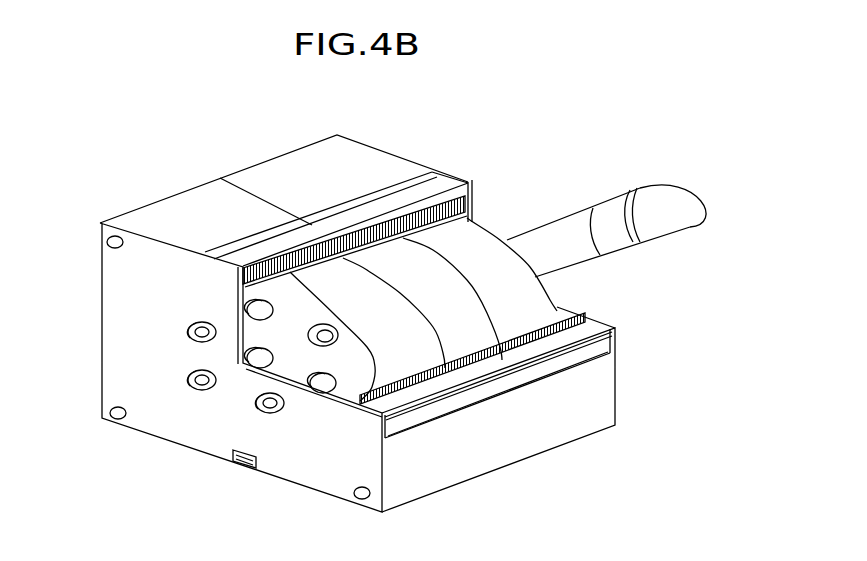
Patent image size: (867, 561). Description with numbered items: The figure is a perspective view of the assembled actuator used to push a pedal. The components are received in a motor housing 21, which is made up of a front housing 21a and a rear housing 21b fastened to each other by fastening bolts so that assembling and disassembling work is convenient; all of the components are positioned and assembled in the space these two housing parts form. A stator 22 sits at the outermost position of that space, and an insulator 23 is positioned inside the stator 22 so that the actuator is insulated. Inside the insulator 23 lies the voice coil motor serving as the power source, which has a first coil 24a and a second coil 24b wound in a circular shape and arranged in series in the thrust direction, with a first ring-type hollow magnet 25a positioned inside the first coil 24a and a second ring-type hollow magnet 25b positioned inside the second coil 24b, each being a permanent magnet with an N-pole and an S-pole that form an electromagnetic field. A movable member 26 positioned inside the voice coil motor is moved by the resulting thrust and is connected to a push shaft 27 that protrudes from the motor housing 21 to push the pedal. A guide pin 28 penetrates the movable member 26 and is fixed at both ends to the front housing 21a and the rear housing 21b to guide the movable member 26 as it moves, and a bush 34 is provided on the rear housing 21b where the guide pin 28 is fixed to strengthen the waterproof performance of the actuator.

The motor housing 21 is at (135, 91).
The front housing 21a is at (310, 166).
The rear housing 21b is at (193, 225).
The stator 22 is at (615, 342).
The insulator 23 is at (577, 327).
The first coil 24a is at (540, 347).
The second coil 24b is at (427, 393).
The first ring-type hollow magnet 25a is at (468, 250).
The second ring-type hollow magnet 25b is at (328, 277).
The movable member 26 is at (398, 275).
The push shaft 27 is at (662, 200).
The guide pin 28 is at (248, 305).
The bush 34 is at (192, 327).